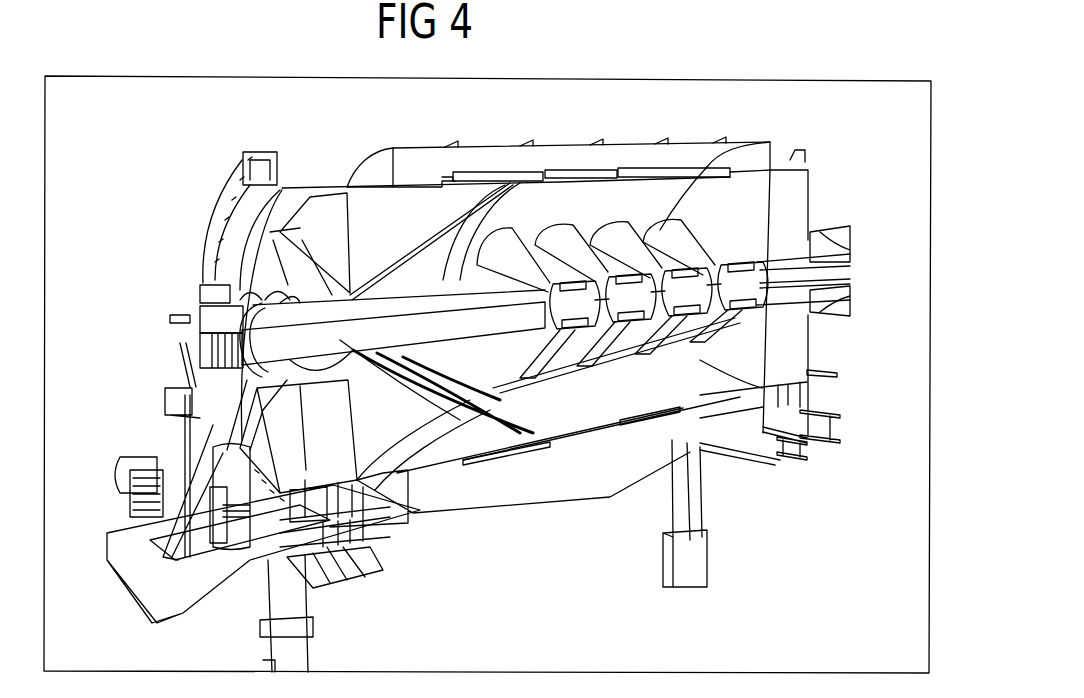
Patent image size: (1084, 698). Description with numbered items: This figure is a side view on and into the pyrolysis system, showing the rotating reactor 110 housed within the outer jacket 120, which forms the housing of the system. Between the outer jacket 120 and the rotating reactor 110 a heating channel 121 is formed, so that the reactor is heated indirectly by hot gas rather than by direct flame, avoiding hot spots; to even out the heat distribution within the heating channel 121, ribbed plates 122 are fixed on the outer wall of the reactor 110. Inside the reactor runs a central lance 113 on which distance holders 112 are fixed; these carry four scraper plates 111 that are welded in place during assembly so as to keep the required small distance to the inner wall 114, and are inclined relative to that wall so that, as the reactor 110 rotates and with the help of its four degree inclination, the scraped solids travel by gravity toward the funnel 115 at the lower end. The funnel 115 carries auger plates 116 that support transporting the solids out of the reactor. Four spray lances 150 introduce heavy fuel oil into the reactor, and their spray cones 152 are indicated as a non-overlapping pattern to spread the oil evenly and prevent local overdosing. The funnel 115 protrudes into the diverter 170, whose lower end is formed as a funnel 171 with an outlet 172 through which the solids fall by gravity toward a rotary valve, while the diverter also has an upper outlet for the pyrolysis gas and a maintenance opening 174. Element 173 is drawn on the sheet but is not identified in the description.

The rotating reactor 110 is at (753, 355).
The scraper plates 111 is at (516, 390).
The distance holders 112 is at (575, 380).
The central lance 113 is at (840, 270).
The inner wall 114 is at (707, 407).
The funnel 115 is at (420, 470).
The auger plates 116 is at (450, 393).
The outer jacket 120 is at (637, 140).
The heating channel 121 is at (752, 150).
The ribbed plates 122 is at (690, 172).
The spray lances 150 is at (850, 258).
The spray cones 152 is at (690, 232).
The diverter 170 is at (185, 307).
The funnel 171 is at (220, 430).
The outlet 172 is at (233, 490).
The flange ring 173 is at (212, 290).
The maintenance opening 174 is at (178, 400).